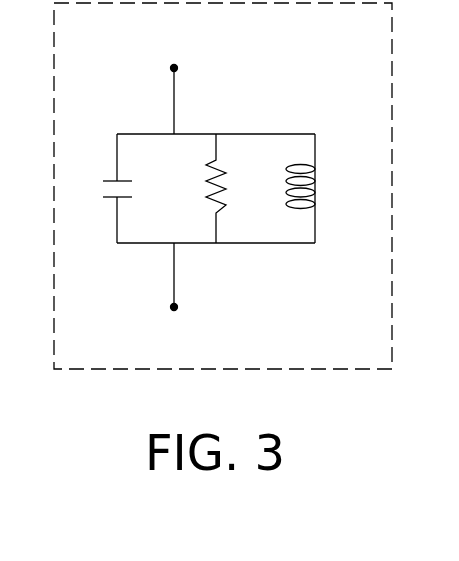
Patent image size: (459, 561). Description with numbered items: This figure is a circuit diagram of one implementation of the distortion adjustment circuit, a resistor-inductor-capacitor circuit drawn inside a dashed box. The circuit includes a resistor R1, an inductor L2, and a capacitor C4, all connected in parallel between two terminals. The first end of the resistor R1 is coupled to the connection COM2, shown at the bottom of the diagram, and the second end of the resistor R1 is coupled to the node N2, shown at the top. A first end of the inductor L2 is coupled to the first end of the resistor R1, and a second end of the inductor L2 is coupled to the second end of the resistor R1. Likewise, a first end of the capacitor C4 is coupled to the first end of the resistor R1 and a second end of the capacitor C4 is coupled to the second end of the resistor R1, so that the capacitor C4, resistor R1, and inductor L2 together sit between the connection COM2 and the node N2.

The node N2 is at (173, 75).
The connection COM2 is at (174, 303).
The capacitor C4 is at (137, 188).
The resistor R1 is at (231, 188).
The inductor L2 is at (319, 188).